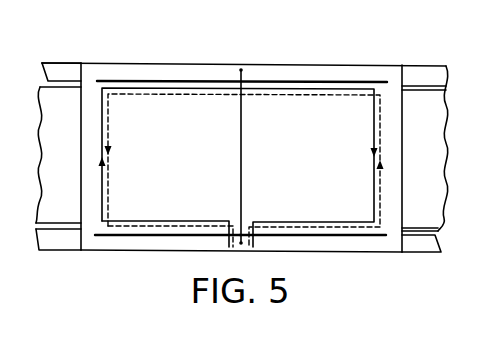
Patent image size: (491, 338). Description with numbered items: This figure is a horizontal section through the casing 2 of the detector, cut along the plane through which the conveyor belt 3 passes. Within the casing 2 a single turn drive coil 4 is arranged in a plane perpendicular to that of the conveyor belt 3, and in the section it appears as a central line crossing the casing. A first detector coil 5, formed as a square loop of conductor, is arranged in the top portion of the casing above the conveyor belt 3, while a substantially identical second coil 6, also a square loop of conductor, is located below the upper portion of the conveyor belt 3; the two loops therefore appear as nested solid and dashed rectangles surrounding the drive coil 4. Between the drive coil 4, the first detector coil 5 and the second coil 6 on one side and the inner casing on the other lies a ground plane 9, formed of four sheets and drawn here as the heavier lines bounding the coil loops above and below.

The casing 2 is at (300, 64).
The conveyor belt 3 is at (418, 97).
The single turn drive coil 4 is at (240, 122).
The first detector coil 5 is at (126, 86).
The second coil 6 is at (122, 236).
The ground plane 9 is at (370, 81).